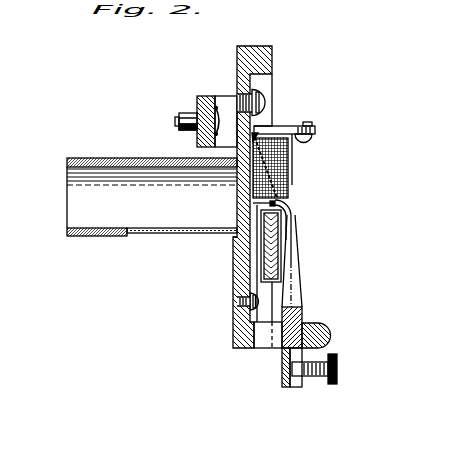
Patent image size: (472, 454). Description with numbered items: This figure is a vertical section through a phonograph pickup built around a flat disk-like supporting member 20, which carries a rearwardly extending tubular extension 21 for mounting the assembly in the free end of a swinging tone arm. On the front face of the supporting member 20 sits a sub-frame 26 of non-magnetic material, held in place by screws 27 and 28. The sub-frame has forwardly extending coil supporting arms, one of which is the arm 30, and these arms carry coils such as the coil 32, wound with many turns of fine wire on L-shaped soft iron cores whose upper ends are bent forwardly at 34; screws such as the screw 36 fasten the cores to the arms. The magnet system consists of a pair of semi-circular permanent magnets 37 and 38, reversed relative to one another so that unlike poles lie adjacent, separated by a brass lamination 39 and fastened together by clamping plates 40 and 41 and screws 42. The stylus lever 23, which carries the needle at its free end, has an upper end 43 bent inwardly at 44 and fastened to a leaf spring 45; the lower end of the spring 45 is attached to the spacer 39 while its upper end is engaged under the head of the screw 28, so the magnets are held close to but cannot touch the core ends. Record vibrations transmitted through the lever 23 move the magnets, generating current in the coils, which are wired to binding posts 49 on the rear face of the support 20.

The supporting member 20 is at (238, 73).
The tubular extension 21 is at (175, 236).
The lever 23 is at (300, 313).
The sub-frame 26 is at (250, 207).
The screw 27 is at (237, 300).
The screw 28 is at (267, 100).
The coil supporting arm 30 is at (313, 127).
The coil 32 is at (282, 194).
The forwardly bent upper end of core 34 is at (315, 136).
The screw 36 is at (305, 122).
The permanent magnet 37 is at (256, 273).
The permanent magnet 38 is at (281, 271).
The brass lamination 39 is at (291, 282).
The clamping plate 40 is at (237, 243).
The clamping plate 41 is at (282, 220).
The screw 42 is at (283, 232).
The upper end of stylus lever 43 is at (294, 203).
The inwardly bent portion of lever 44 is at (280, 178).
The leaf spring 45 is at (265, 182).
The binding post 49 is at (195, 108).